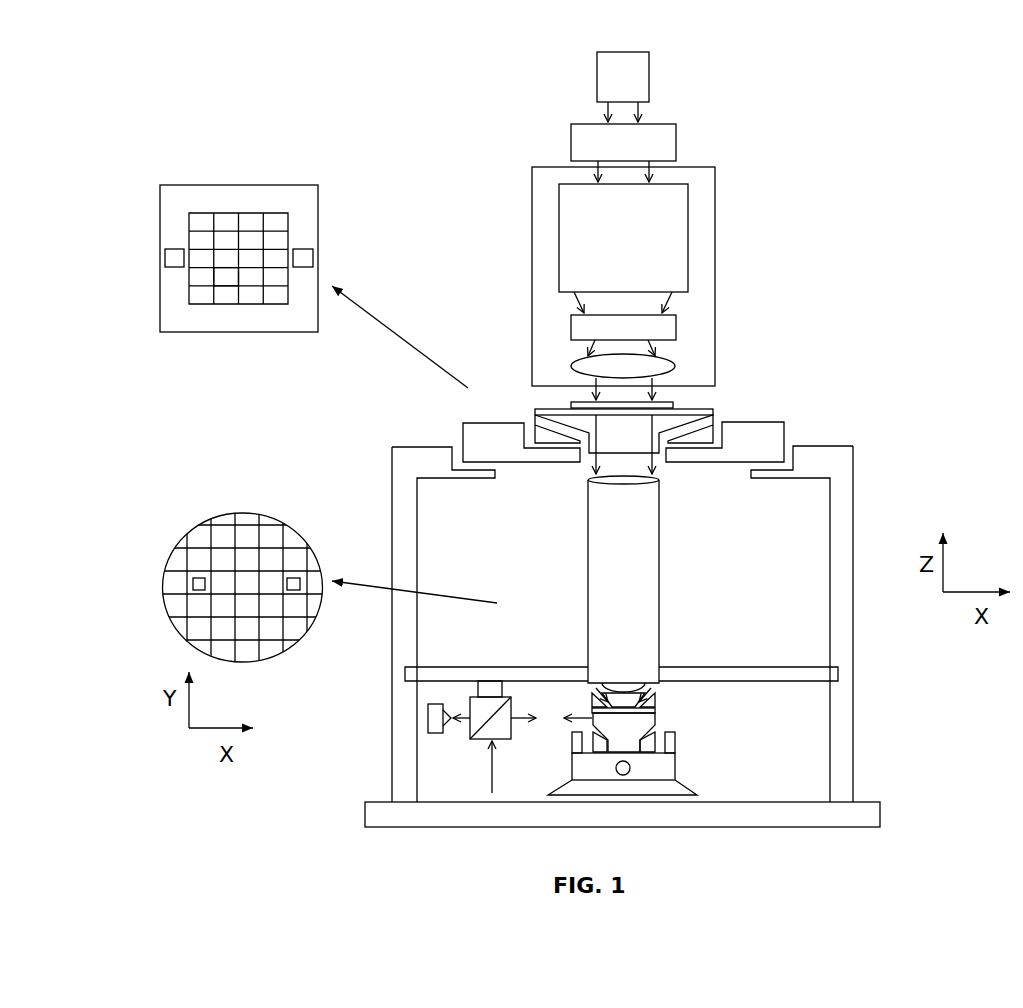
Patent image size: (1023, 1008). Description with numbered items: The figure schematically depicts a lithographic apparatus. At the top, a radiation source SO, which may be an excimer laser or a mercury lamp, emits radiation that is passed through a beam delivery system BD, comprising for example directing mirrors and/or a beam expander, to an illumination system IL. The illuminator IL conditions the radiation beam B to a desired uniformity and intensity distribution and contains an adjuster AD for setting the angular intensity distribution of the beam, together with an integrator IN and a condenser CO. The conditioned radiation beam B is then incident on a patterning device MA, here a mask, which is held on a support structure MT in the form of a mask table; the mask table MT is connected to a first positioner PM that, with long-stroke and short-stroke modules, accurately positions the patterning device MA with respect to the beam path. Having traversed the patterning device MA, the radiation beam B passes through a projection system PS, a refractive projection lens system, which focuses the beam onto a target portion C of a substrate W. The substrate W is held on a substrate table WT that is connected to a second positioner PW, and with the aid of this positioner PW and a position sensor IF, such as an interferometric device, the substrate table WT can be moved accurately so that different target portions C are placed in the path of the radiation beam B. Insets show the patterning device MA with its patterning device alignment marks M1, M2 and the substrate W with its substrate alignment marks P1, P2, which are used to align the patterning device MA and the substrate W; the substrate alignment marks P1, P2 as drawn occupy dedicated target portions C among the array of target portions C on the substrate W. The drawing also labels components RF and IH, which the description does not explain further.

The radiation source SO is at (649, 80).
The beam delivery system BD is at (676, 148).
The illumination system IL is at (714, 198).
The adjuster AD is at (688, 248).
The integrator IN is at (677, 325).
The condenser CO is at (660, 372).
The radiation beam B is at (627, 398).
The patterning device MA is at (571, 404).
The support structure MT is at (706, 417).
The first positioner PM is at (463, 423).
The projection system PS is at (659, 565).
The reference frame RF is at (725, 667).
The liquid supply system / immersion hood IH is at (657, 694).
The substrate table WT is at (655, 718).
The second positioner PW is at (676, 770).
The substrate W is at (590, 712).
The position sensor IF is at (462, 745).
The patterning device alignment mark M1 is at (303, 249).
The patterning device alignment mark M2 is at (174, 249).
The target portion C is at (222, 280).
The substrate alignment mark P1 is at (199, 578).
The substrate alignment mark P2 is at (293, 578).